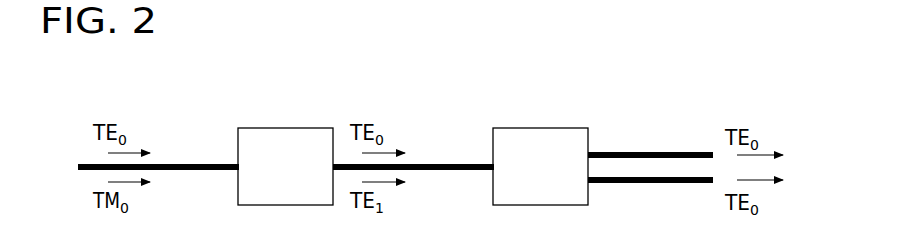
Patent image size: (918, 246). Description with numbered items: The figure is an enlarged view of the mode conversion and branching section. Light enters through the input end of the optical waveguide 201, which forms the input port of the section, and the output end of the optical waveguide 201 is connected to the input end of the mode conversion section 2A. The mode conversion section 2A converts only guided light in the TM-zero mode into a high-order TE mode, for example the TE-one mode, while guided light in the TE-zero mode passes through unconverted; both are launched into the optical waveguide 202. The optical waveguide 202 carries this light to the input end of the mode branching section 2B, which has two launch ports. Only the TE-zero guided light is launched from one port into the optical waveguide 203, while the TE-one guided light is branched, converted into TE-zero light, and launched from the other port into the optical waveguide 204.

The optical waveguide 201 is at (194, 164).
The mode conversion section 2A is at (287, 128).
The optical waveguide 202 is at (450, 164).
The mode branching section 2B is at (540, 128).
The optical waveguide 203 is at (652, 152).
The optical waveguide 204 is at (651, 183).